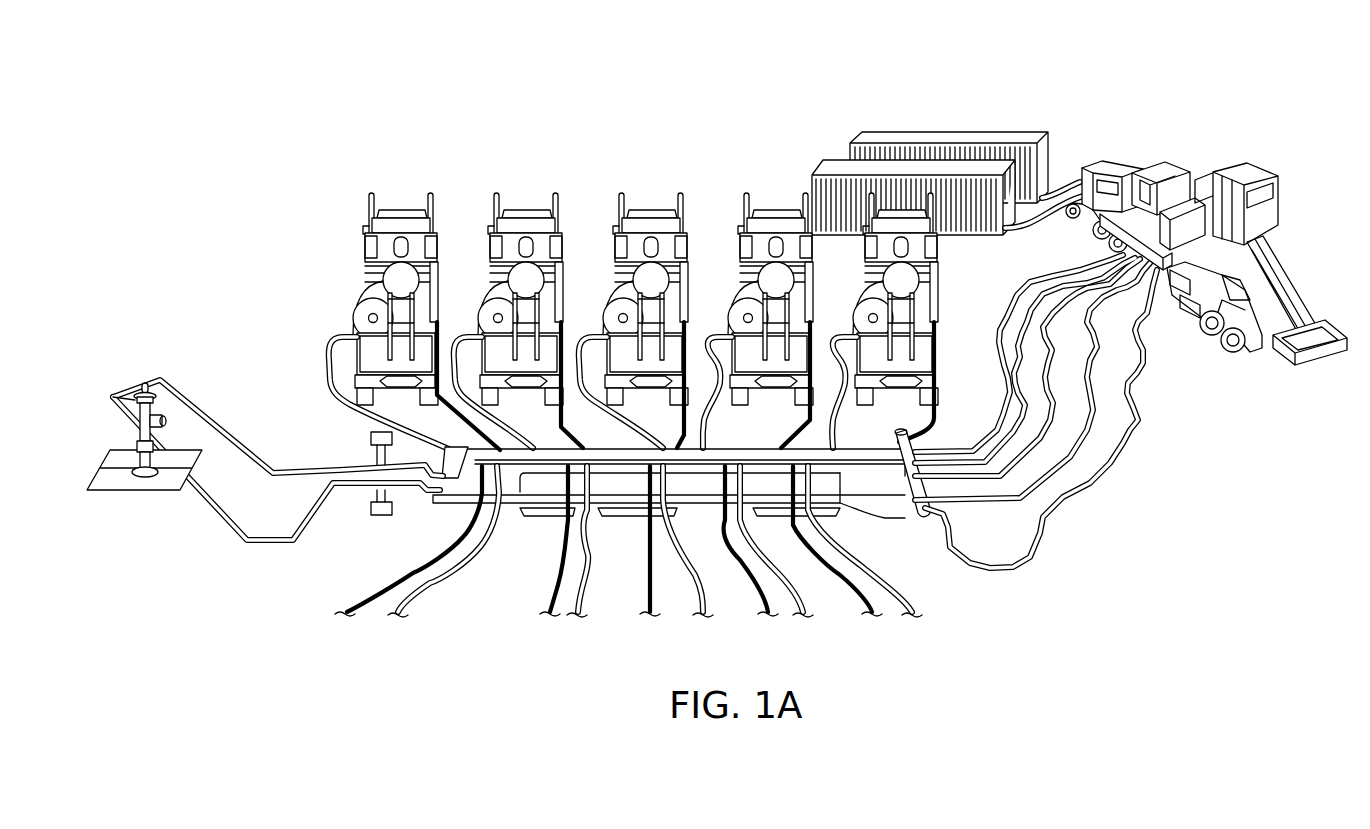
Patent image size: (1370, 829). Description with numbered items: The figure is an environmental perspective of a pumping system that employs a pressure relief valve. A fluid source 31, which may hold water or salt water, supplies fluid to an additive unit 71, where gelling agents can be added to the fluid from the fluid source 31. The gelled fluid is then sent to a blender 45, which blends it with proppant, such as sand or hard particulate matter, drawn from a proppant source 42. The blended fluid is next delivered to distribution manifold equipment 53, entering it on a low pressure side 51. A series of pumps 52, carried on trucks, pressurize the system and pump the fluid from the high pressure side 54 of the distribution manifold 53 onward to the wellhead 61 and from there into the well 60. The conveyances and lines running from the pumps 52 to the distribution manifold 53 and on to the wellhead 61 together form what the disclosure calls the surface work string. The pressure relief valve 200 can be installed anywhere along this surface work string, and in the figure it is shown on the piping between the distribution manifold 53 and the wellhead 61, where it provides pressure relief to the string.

The fluid source 31 is at (918, 140).
The proppant source 42 is at (1290, 228).
The blender 45 is at (1178, 165).
The low pressure side 51 is at (914, 526).
The pumps 52 is at (528, 212).
The distribution manifold equipment 53 is at (612, 590).
The high pressure side 54 is at (428, 500).
The well 60 is at (140, 494).
The wellhead 61 is at (144, 384).
The additive unit 71 is at (1155, 168).
The pressure relief valve 200 is at (368, 438).